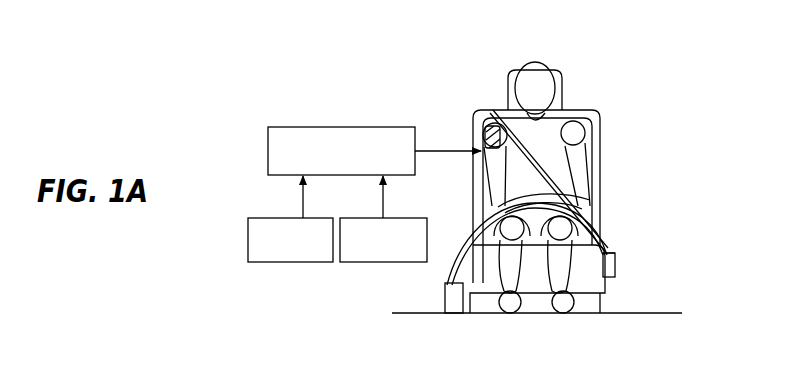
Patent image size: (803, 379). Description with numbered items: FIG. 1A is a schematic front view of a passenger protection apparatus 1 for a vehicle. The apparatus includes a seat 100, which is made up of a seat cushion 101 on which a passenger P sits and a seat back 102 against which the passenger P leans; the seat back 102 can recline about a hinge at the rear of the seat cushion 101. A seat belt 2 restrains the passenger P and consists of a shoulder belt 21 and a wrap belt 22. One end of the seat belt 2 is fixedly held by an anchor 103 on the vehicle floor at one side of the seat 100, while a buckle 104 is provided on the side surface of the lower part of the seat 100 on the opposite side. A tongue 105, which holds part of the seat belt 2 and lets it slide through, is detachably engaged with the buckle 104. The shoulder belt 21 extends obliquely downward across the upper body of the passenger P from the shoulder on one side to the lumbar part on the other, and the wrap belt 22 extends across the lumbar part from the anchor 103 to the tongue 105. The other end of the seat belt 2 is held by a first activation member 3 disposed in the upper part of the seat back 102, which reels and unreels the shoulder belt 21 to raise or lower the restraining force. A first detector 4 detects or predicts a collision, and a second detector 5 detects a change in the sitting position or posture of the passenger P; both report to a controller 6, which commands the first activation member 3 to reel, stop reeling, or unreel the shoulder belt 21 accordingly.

The passenger P is at (536, 60).
The passenger protection apparatus 1 is at (606, 98).
The seat belt 2 is at (587, 180).
The first activation member 3 is at (486, 130).
The first detector 4 is at (325, 218).
The second detector 5 is at (404, 218).
The controller 6 is at (392, 127).
The shoulder belt 21 is at (545, 172).
The wrap belt 22 is at (555, 202).
The seat 100 is at (617, 296).
The seat cushion 101 is at (480, 265).
The seat back 102 is at (600, 118).
The anchor 103 is at (445, 299).
The buckle 104 is at (617, 264).
The tongue 105 is at (612, 252).